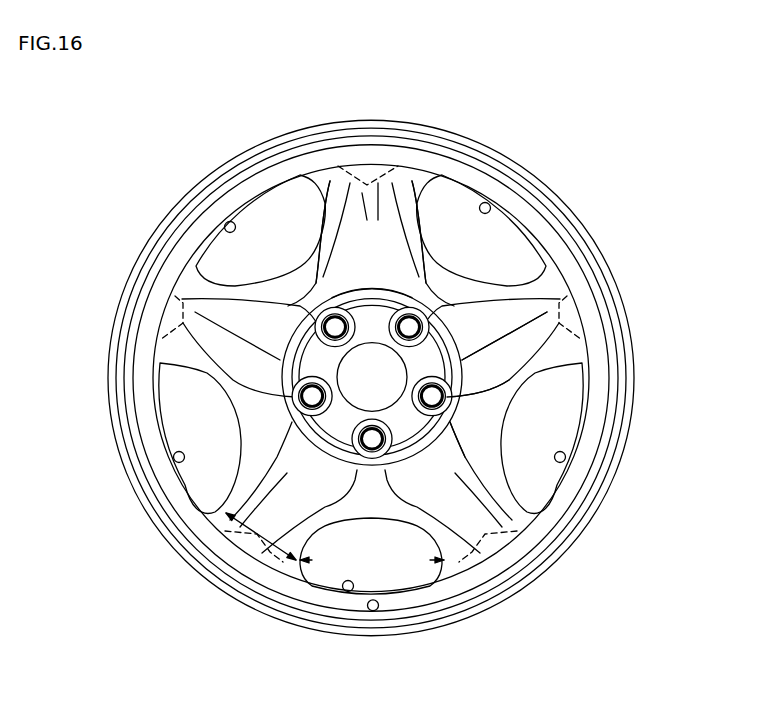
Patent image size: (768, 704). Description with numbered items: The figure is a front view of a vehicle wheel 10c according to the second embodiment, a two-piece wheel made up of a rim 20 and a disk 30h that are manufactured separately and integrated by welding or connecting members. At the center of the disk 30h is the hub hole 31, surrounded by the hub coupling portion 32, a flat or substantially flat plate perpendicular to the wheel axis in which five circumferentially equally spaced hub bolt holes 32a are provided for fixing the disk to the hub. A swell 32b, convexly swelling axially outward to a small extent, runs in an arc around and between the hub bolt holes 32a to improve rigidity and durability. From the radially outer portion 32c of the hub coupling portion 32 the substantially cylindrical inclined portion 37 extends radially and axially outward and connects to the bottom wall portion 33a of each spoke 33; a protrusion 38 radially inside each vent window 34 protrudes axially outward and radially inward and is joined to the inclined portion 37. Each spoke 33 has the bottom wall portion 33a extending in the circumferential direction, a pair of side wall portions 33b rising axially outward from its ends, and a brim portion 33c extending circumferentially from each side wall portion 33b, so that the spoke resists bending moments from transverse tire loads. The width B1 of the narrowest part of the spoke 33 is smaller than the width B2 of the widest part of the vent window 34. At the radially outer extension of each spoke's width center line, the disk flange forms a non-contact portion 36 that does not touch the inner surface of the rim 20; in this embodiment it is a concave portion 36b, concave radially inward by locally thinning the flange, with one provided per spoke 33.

The wheel 10c is at (385, 371).
The rim 20 is at (458, 136).
The disk 30h is at (573, 353).
The hub hole 31 is at (356, 402).
The hub coupling portion 32 is at (354, 377).
The hub bolt hole 32a is at (313, 398).
The swell 32b is at (308, 366).
The radially outer portion of the hub coupling portion 32c is at (487, 393).
The spoke 33 is at (386, 190).
The bottom wall portion 33a is at (350, 192).
The side wall portion 33b is at (318, 212).
The brim portion 33c is at (322, 243).
The vent window 34 is at (230, 227).
The non-contact portion 36 is at (385, 355).
The concave portion 36b is at (366, 182).
The inclined portion 37 is at (495, 488).
The protrusion 38 is at (487, 415).
The width of smallest width portion of the spoke B1 is at (195, 538).
The width of largest width portion of the vent window B2 is at (372, 598).